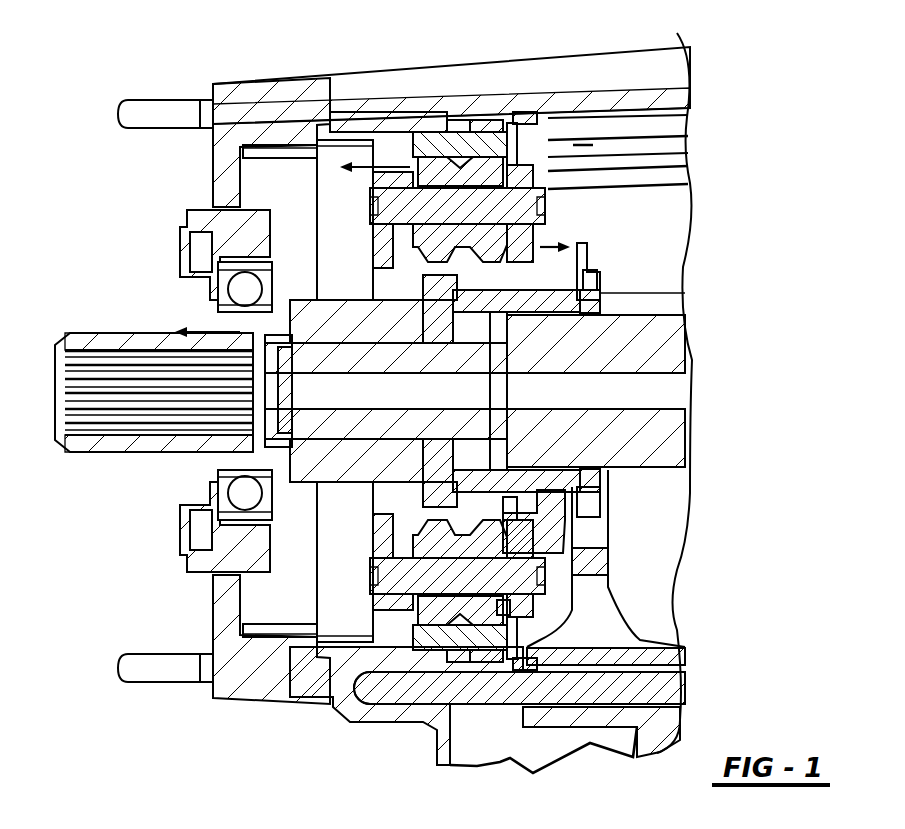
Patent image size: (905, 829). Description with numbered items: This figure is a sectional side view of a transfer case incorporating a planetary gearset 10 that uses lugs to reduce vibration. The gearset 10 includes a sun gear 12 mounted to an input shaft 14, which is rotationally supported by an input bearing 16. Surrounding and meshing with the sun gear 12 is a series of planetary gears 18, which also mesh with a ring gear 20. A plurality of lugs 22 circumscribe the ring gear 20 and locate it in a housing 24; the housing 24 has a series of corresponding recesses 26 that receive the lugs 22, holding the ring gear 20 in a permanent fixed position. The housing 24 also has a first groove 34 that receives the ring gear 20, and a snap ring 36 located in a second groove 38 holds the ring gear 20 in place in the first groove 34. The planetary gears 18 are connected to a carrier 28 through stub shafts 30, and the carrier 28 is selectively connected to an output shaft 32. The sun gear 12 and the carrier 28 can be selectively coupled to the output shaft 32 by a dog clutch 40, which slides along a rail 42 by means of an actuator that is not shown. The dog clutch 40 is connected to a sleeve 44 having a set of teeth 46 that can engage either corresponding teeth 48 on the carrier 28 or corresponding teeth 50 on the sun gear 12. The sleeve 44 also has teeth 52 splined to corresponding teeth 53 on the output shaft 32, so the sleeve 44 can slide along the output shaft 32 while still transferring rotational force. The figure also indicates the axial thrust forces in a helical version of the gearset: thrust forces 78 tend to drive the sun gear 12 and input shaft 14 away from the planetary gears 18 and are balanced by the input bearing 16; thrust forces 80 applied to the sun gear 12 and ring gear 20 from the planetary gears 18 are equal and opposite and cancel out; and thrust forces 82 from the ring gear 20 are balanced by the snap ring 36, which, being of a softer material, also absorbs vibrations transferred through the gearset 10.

The planetary gearset 10 is at (750, 147).
The sun gear 12 is at (433, 278).
The input shaft 14 is at (110, 440).
The input bearing 16 is at (187, 243).
The planetary gears 18 is at (580, 600).
The ring gear 20 is at (437, 640).
The lugs 22 is at (447, 120).
The housing 24 is at (663, 107).
The recesses 26 is at (470, 127).
The carrier 28 is at (580, 533).
The stub shafts 30 is at (383, 570).
The output shaft 32 is at (655, 432).
The first groove 34 is at (430, 127).
The snap ring 36 is at (517, 127).
The second groove 38 is at (505, 600).
The dog clutch 40 is at (600, 473).
The rail 42 is at (665, 697).
The sleeve 44 is at (547, 300).
The teeth 46 is at (460, 290).
The corresponding teeth 48 is at (585, 287).
The corresponding teeth 50 is at (433, 253).
The teeth 52 is at (600, 472).
The corresponding teeth 53 is at (560, 448).
The thrust forces 78 is at (187, 290).
The thrust forces 80 is at (390, 167).
The thrust forces 82 is at (548, 143).